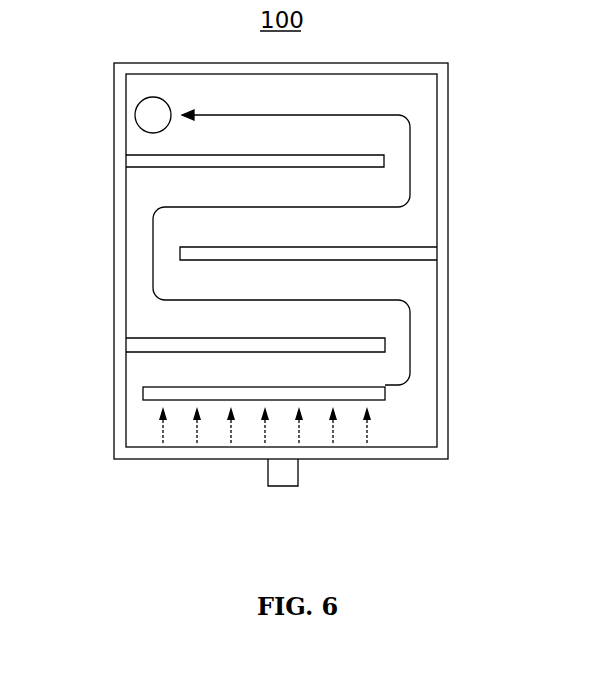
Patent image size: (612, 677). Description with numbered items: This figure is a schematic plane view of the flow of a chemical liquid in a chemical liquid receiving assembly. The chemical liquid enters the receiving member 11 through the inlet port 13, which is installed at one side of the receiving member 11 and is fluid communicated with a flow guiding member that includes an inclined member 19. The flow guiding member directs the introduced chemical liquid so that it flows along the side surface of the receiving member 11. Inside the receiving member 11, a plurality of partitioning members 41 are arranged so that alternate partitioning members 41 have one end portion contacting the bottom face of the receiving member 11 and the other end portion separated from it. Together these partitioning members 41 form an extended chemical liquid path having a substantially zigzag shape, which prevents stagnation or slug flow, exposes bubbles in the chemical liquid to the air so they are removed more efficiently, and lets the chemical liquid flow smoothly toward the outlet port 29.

The receiving member 11 is at (448, 307).
The inlet port 13 is at (283, 480).
The inclined member 19 is at (385, 392).
The outlet port 29 is at (135, 113).
The partitioning member 41 is at (437, 250).